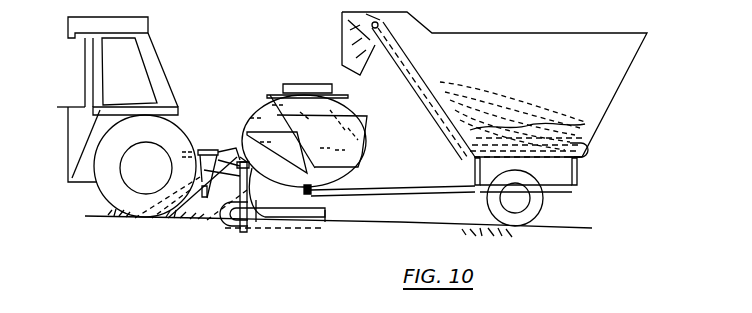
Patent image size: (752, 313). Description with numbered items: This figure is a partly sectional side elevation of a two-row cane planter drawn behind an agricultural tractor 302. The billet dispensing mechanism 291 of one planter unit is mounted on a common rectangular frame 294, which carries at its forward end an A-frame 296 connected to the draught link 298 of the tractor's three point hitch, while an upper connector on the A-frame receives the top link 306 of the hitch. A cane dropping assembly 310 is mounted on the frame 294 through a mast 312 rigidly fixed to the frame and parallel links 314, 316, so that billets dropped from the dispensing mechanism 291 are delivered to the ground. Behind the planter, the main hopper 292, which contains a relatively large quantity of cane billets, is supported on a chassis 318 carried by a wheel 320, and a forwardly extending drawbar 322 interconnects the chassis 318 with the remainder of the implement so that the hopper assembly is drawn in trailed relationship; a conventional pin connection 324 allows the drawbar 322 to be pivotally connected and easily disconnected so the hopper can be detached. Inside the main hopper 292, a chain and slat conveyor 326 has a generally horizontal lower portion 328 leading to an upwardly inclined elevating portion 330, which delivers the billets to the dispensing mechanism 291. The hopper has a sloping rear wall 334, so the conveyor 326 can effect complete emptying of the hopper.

The billet dispensing mechanism 291 is at (292, 92).
The main hopper 292 is at (497, 33).
The rectangular frame 294 is at (218, 222).
The A-frame 296 is at (222, 150).
The draught link 298 is at (134, 221).
The agricultural tractor 302 is at (150, 37).
The top link 306 is at (203, 150).
The cane dropping assembly 310 is at (217, 227).
The mast 312 is at (170, 213).
The parallel link 314 is at (256, 222).
The parallel link 316 is at (242, 157).
The chassis 318 is at (463, 158).
The wheel 320 is at (490, 212).
The drawbar 322 is at (408, 186).
The pin connection 324 is at (336, 222).
The chain and slat conveyor 326 is at (418, 88).
The lower portion 328 is at (538, 150).
The elevating portion 330 is at (443, 88).
The sloping rear wall 334 is at (617, 88).